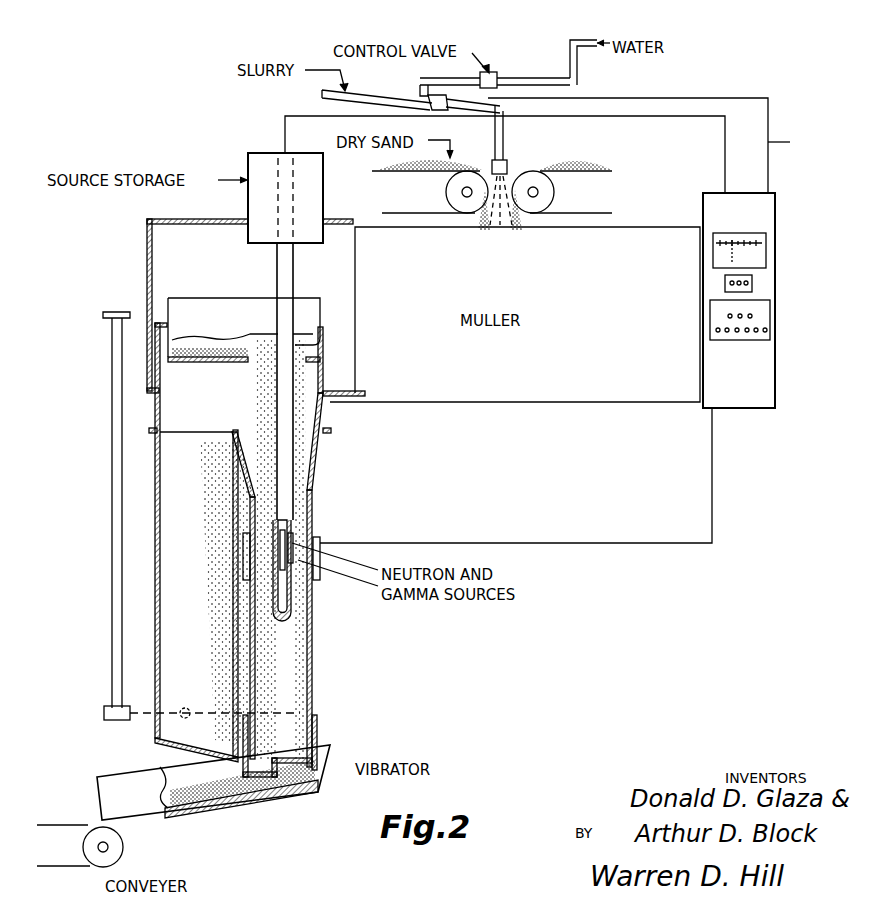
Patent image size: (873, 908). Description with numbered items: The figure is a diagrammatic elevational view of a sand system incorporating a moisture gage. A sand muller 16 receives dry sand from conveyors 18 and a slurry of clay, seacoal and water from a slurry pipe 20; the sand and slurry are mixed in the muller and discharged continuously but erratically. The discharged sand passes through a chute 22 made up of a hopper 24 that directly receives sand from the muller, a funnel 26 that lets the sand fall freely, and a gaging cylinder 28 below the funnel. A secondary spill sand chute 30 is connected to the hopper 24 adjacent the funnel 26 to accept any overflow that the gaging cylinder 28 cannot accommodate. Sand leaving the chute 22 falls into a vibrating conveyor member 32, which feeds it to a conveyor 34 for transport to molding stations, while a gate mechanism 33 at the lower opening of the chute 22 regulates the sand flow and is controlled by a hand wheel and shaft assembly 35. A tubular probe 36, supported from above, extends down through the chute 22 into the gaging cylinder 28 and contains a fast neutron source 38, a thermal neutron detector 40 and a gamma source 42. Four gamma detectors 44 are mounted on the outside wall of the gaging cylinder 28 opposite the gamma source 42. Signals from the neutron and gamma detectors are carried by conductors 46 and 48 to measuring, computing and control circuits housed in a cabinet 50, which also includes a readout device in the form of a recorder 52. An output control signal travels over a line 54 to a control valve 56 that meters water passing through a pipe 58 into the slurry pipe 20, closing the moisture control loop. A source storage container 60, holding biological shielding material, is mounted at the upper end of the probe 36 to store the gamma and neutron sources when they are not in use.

The sand muller 16 is at (572, 403).
The conveyors 18 is at (412, 171).
The slurry pipe 20 is at (504, 137).
The chute 22 is at (314, 672).
The hopper 24 is at (322, 388).
The funnel 26 is at (318, 463).
The gaging cylinder 28 is at (314, 519).
The secondary spill sand chute 30 is at (157, 468).
The vibrating conveyor member 32 is at (332, 760).
The gate mechanism 33 is at (318, 735).
The conveyor 34 is at (67, 825).
The hand wheel and shaft assembly 35 is at (112, 444).
The tubular probe 36 is at (277, 402).
The fast neutron source 38 is at (292, 565).
The thermal neutron detector 40 is at (276, 572).
The gamma source 42 is at (296, 543).
The gamma detectors 44 is at (243, 553).
The conductor 46 is at (283, 150).
The conductor 48 is at (470, 543).
The cabinet 50 is at (775, 307).
The recorder 52 is at (766, 257).
The line 54 is at (654, 145).
The control valve 56 is at (497, 74).
The pipe 58 is at (580, 40).
The source storage container 60 is at (248, 210).